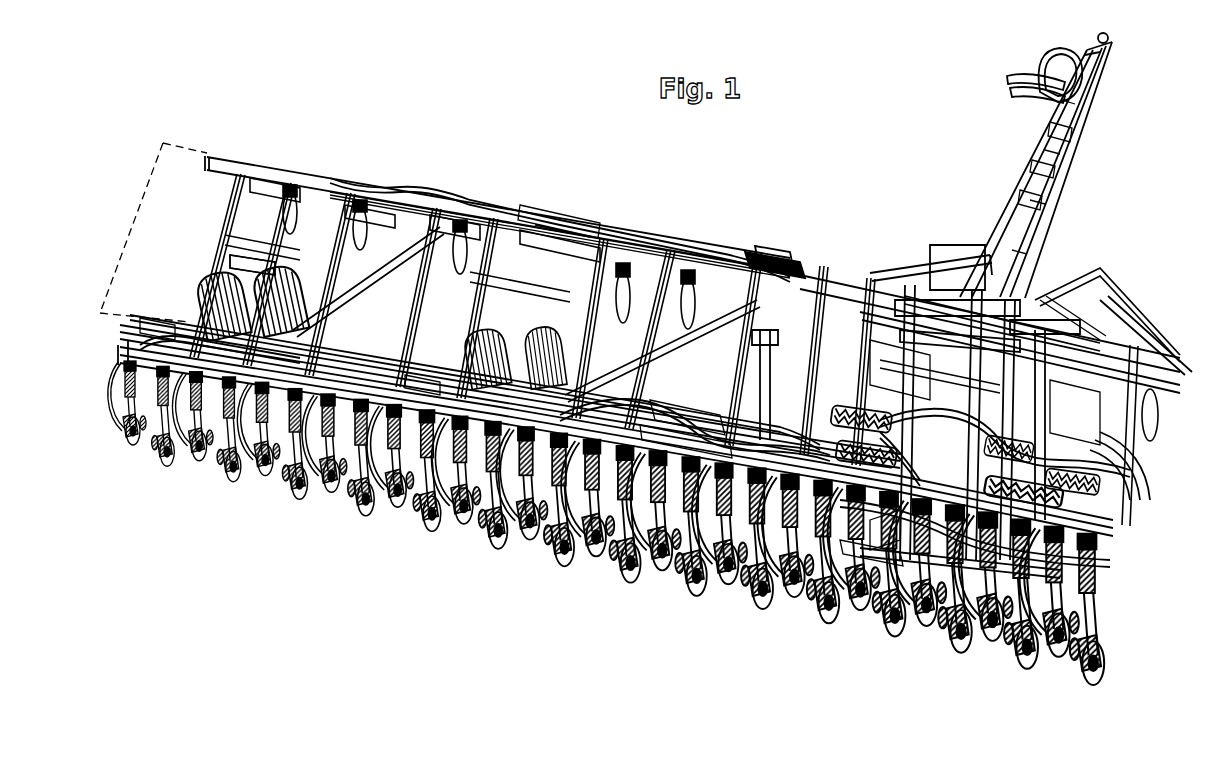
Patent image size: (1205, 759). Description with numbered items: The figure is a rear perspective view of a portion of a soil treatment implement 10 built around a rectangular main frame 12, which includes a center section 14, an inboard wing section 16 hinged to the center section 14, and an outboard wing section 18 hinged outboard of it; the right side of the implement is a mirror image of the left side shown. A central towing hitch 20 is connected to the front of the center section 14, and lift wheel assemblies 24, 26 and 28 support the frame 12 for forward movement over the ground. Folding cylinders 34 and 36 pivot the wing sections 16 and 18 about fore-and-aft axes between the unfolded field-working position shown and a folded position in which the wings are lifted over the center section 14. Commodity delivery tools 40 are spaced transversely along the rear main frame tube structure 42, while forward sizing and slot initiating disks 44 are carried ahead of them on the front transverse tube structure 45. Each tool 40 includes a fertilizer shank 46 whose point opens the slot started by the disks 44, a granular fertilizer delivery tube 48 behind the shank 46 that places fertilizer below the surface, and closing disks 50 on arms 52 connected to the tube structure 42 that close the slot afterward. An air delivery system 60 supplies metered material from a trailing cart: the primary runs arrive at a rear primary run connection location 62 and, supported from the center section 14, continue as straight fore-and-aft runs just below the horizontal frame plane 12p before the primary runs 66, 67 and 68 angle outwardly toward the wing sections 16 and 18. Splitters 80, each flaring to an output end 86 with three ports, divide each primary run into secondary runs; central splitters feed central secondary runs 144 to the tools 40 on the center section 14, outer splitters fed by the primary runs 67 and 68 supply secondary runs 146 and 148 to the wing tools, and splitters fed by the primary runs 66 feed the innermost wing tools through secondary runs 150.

The soil treatment implement 10 is at (480, 128).
The main frame 12 is at (787, 213).
The horizontal plane of the main frame 12p is at (176, 175).
The center section 14 is at (888, 282).
The inboard wing section 16 is at (664, 237).
The outboard wing section 18 is at (421, 195).
The central towing hitch 20 is at (1060, 170).
The lift wheel assembly 24 is at (805, 382).
The lift wheel assembly 26 is at (492, 318).
The lift wheel assembly 28 is at (232, 268).
The folding cylinder 34 is at (921, 300).
The folding cylinder 36 is at (566, 218).
The commodity delivery tools 40 is at (128, 440).
The rear main frame tube structure 42 is at (690, 532).
The sizing and slot initiating disks 44 is at (366, 258).
The front transverse tube structure 45 is at (396, 190).
The fertilizer shanks 46 is at (209, 442).
The granular fertilizer delivery tubes 48 is at (166, 466).
The closing disks 50 is at (301, 472).
The arms 52 is at (287, 456).
The air delivery system 60 is at (916, 620).
The rear primary run connection location 62 is at (868, 608).
The primary run 66 is at (725, 395).
The primary run 67 is at (690, 406).
The primary run 68 is at (376, 378).
The splitter 80 is at (320, 365).
The output end 86 is at (306, 362).
The central secondary runs 144 is at (745, 585).
The secondary runs 146 is at (430, 376).
The secondary runs 148 is at (190, 325).
The secondary runs 150 is at (602, 546).